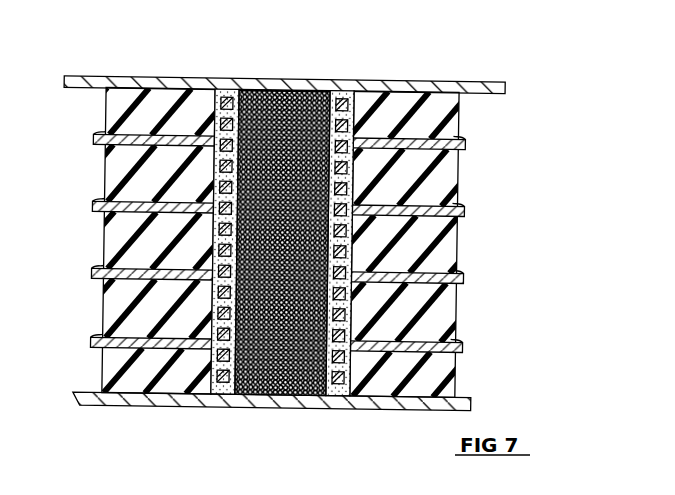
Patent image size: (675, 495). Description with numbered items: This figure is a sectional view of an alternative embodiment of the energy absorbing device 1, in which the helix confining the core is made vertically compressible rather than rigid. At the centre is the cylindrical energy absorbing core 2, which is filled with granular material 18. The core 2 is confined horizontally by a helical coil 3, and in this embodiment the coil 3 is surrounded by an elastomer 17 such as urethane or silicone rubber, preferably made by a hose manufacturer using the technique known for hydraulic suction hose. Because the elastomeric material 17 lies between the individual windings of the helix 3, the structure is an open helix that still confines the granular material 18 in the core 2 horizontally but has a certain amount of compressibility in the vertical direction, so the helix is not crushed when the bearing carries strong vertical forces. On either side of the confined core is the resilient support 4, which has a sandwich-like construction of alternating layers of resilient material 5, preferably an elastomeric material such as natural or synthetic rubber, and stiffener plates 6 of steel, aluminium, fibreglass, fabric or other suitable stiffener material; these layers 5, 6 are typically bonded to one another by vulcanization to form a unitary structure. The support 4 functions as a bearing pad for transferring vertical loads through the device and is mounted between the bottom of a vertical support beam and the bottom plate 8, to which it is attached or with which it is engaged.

The composite panel assembly 1 is at (294, 221).
The central energy absorbing core 2 is at (306, 92).
The helical coil 3 is at (346, 96).
The resilient support 4 is at (466, 240).
The resilient material 5 is at (452, 128).
The stiffener plates 6 is at (458, 210).
The bottom coupling plate 8 is at (478, 400).
The elastomer 17 is at (352, 117).
The granular material 18 is at (258, 91).